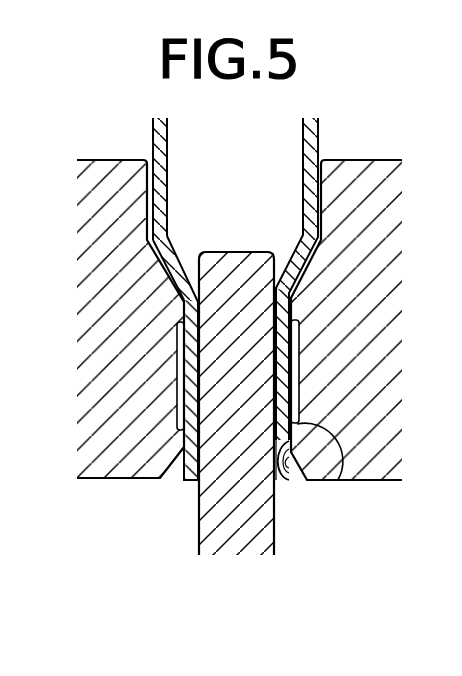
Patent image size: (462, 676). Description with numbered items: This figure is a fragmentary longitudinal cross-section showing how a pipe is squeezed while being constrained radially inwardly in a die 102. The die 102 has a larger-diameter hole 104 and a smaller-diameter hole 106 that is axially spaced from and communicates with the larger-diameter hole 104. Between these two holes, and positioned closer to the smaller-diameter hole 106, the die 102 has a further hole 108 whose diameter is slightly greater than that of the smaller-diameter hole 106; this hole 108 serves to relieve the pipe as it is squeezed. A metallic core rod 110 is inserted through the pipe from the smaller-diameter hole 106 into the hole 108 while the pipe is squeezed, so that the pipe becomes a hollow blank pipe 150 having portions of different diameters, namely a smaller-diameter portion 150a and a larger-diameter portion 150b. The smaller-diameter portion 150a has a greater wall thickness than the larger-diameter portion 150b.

The die 102 is at (377, 288).
The larger-diameter hole 104 is at (312, 222).
The smaller-diameter hole 106 is at (282, 481).
The hole 108 is at (339, 480).
The metallic core rod 110 is at (232, 530).
The hollow blank pipe 150 is at (103, 337).
The smaller-diameter portion 150a is at (180, 361).
The larger-diameter portion 150b is at (152, 146).